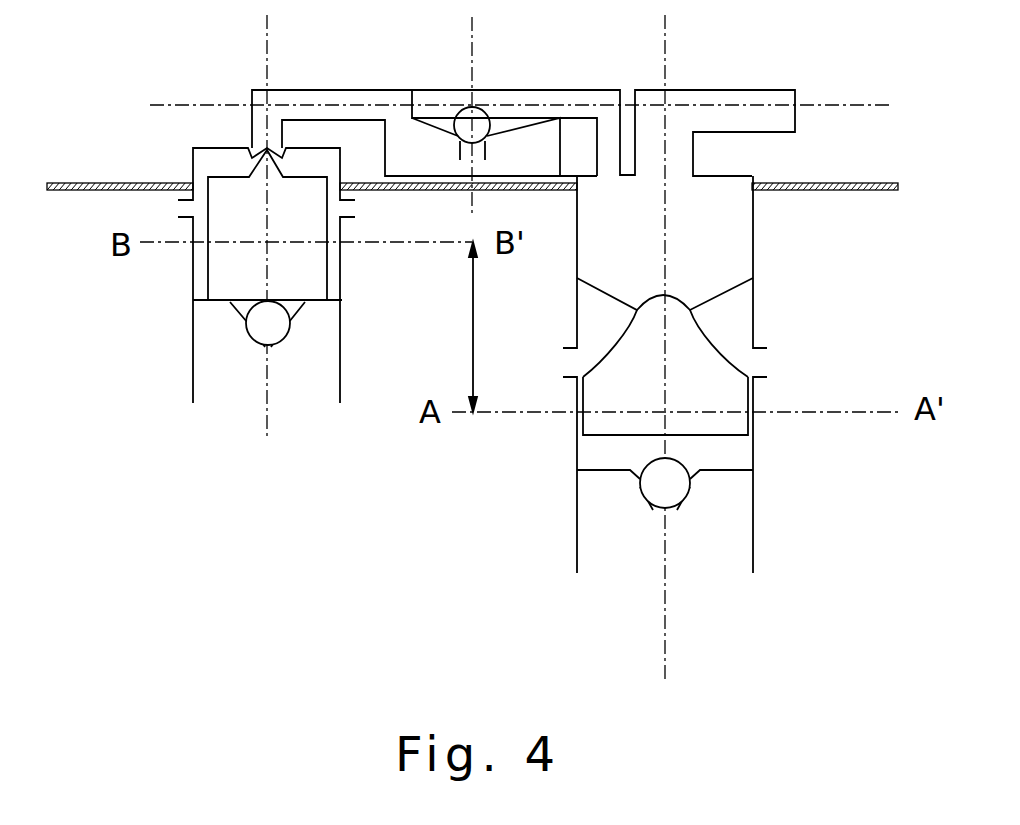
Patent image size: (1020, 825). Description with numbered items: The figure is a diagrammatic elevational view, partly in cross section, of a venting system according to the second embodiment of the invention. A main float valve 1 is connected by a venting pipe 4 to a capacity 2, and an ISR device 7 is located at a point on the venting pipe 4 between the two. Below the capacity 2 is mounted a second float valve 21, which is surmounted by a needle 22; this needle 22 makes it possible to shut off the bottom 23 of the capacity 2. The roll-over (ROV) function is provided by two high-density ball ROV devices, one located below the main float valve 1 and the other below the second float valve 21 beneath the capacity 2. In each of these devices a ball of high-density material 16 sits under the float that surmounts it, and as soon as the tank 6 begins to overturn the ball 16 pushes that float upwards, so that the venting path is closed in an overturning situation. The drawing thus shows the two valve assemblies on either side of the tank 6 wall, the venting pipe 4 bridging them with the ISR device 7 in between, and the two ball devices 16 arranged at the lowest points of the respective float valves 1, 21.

The float valve 1 is at (148, 295).
The capacity 2 is at (798, 240).
The venting pipe 4 is at (324, 97).
The tank 6 is at (171, 512).
The ISR device 7 is at (440, 117).
The balls of high-density material 16 is at (260, 327).
The second float valve 21 is at (737, 427).
The needle 22 is at (683, 297).
The bottom 23 is at (728, 293).